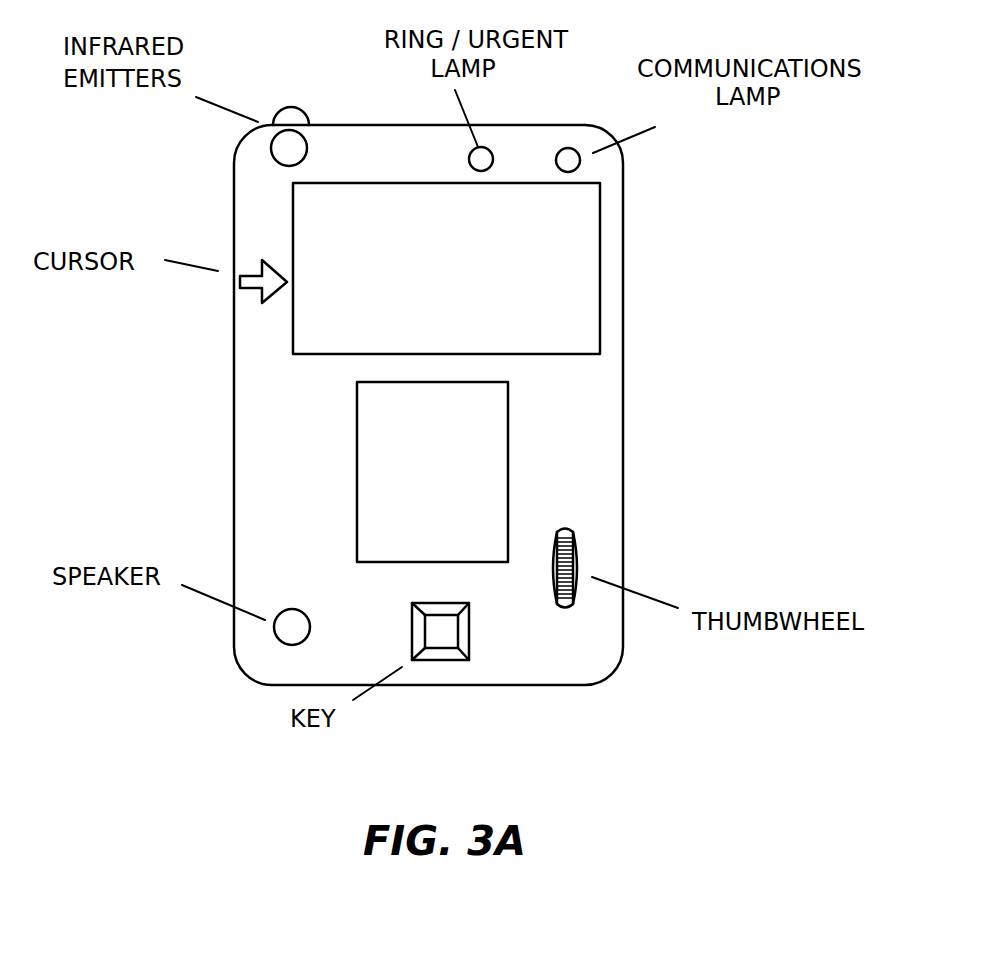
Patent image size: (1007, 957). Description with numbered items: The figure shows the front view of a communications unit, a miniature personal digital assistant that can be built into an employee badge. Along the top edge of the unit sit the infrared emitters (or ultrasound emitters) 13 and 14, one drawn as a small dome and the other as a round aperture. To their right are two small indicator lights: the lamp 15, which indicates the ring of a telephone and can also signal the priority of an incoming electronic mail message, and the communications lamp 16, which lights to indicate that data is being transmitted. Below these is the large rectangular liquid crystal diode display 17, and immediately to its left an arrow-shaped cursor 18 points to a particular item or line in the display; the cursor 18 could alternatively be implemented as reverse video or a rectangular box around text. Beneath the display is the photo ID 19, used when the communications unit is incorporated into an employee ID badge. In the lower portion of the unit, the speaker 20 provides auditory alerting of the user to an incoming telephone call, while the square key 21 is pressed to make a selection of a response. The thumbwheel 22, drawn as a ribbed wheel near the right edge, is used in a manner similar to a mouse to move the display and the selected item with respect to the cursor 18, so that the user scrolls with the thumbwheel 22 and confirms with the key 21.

The infrared emitter 13 is at (300, 110).
The infrared emitter 14 is at (305, 136).
The lamp 15 is at (486, 148).
The communications lamp 16 is at (573, 149).
The liquid crystal diode display 17 is at (600, 216).
The cursor 18 is at (262, 300).
The photo ID 19 is at (508, 410).
The speaker 20 is at (300, 611).
The key 21 is at (462, 603).
The thumbwheel 22 is at (568, 522).